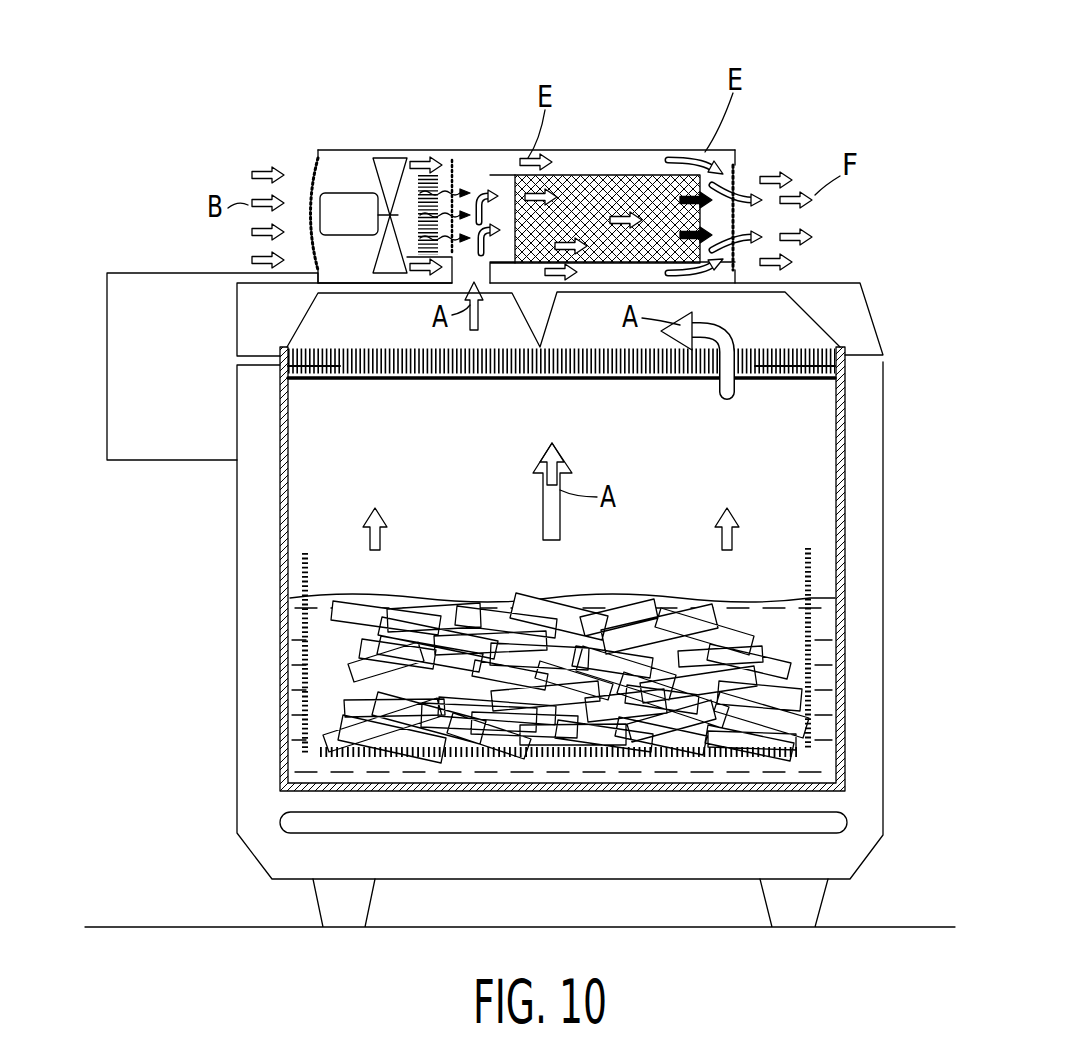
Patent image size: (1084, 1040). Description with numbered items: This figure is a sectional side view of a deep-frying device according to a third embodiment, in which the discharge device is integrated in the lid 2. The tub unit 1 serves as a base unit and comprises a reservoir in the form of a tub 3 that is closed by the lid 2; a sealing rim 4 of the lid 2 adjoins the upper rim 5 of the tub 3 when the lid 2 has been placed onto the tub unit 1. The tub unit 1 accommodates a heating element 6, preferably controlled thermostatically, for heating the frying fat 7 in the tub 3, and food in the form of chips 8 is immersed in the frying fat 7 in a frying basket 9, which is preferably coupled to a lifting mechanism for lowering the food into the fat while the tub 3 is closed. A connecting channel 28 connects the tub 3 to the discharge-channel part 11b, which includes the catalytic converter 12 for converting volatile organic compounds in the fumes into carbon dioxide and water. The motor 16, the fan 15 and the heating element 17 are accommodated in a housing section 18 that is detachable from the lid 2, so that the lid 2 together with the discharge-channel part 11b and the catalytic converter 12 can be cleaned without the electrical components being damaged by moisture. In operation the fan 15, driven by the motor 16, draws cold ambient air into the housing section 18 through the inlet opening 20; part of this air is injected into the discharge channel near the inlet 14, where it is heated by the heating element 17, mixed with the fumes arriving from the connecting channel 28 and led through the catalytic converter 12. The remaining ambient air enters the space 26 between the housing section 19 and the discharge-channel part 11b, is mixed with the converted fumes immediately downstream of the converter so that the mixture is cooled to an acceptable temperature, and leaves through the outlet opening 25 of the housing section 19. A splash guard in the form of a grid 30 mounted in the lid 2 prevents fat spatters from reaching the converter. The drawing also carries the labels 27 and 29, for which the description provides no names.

The tub unit 1 is at (905, 546).
The lid 2 is at (910, 325).
The tub 3 is at (843, 437).
The sealing rim 4 is at (625, 380).
The upper rim 5 is at (765, 352).
The heating element 6 is at (833, 823).
The frying fat 7 is at (648, 600).
The chips 8 is at (437, 608).
The frying basket 9 is at (808, 548).
The discharge-channel part 11b is at (485, 162).
The catalytic converter 12 is at (623, 175).
The inlet 14 is at (447, 183).
The fan 15 is at (388, 160).
The motor 16 is at (337, 229).
The heating element 17 is at (418, 193).
The housing section 18 is at (347, 150).
The housing section 19 is at (677, 150).
The inlet opening 20 is at (316, 163).
The outlet opening 25 is at (736, 180).
The space 26 is at (588, 160).
The air treatment unit 27 is at (584, 63).
The connecting channel 28 is at (383, 318).
The grille inlet 29 is at (338, 355).
The grid 30 is at (155, 461).